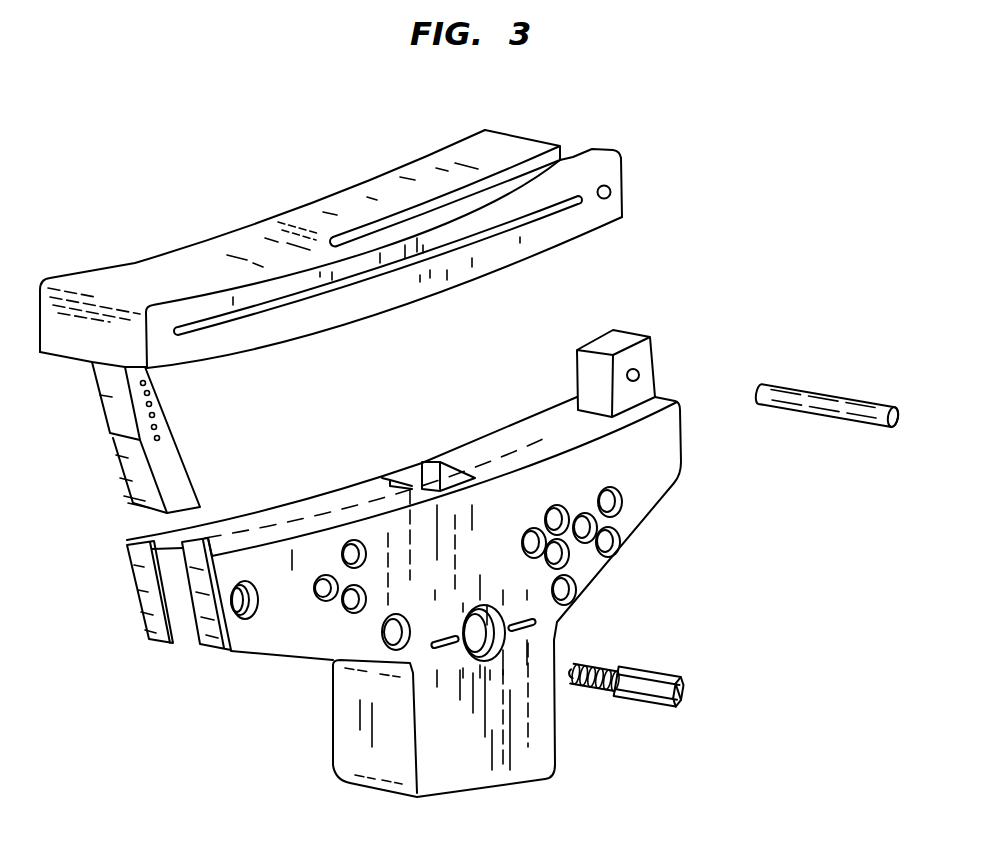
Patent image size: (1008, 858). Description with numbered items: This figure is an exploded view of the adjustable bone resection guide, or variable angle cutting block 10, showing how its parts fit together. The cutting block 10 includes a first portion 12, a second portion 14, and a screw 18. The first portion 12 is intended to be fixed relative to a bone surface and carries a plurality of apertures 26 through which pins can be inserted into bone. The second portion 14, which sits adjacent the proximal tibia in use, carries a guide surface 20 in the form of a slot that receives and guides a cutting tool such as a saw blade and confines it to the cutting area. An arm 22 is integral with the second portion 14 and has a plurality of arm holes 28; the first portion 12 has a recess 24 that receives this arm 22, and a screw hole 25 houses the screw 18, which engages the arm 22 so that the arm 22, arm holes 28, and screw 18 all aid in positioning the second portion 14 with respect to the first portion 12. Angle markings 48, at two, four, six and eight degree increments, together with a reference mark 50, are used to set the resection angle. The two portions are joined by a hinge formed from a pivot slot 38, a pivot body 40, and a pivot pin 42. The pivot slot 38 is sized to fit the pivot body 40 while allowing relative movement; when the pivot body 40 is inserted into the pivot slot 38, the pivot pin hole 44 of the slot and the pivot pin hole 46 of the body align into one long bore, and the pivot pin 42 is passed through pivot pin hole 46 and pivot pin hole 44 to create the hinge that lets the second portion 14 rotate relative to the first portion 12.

The cutting block 10 is at (245, 158).
The first portion 12 is at (513, 770).
The second portion 14 is at (502, 145).
The screw 18 is at (655, 663).
The guide surface 20 is at (198, 327).
The arm 22 is at (103, 394).
The recess 24 is at (163, 553).
The screw hole 25 is at (238, 608).
The apertures 26 is at (622, 497).
The arm holes 28 is at (150, 415).
The pivot slot 38 is at (572, 152).
The pivot body 40 is at (618, 340).
The pivot pin 42 is at (875, 410).
The pivot pin hole 44 is at (608, 191).
The pivot pin hole 46 is at (638, 373).
The angle markings 48 is at (152, 610).
The reference mark 50 is at (115, 443).